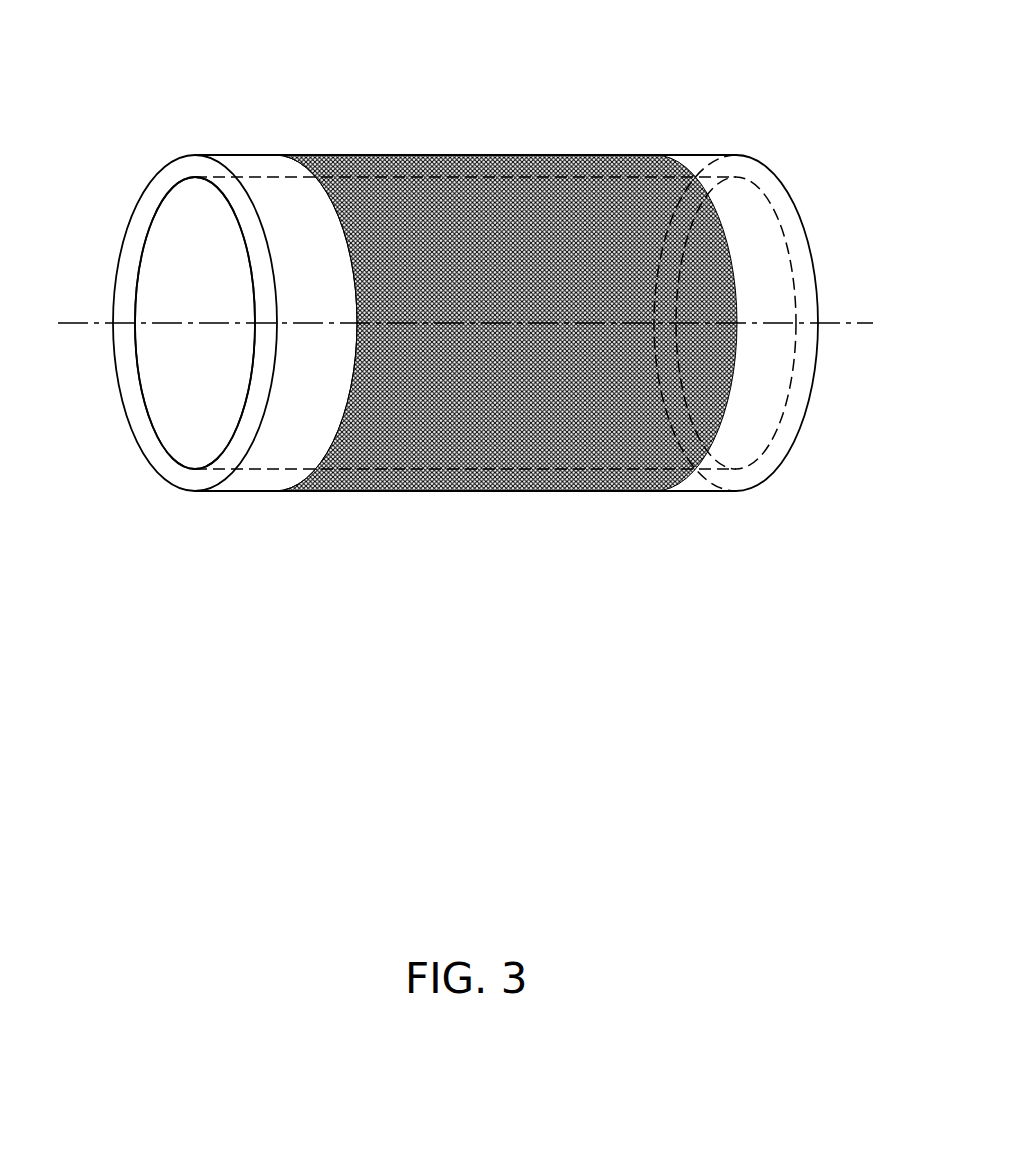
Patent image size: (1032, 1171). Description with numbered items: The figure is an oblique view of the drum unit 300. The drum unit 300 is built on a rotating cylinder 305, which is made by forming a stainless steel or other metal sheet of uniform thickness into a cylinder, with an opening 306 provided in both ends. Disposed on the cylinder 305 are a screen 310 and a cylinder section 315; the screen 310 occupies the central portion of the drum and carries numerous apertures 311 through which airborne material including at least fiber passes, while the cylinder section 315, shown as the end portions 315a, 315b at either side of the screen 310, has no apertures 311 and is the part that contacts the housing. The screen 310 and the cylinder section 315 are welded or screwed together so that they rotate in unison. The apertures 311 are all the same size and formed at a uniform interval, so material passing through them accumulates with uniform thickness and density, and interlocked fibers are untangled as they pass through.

The drum unit 300 is at (870, 46).
The cylinder 305 is at (153, 203).
The opening 306 is at (157, 292).
The screen 310 is at (485, 151).
The apertures 311 is at (580, 157).
The cylinder section 315 is at (517, 275).
The first end portion 315a is at (255, 167).
The second end portion 315b is at (702, 170).